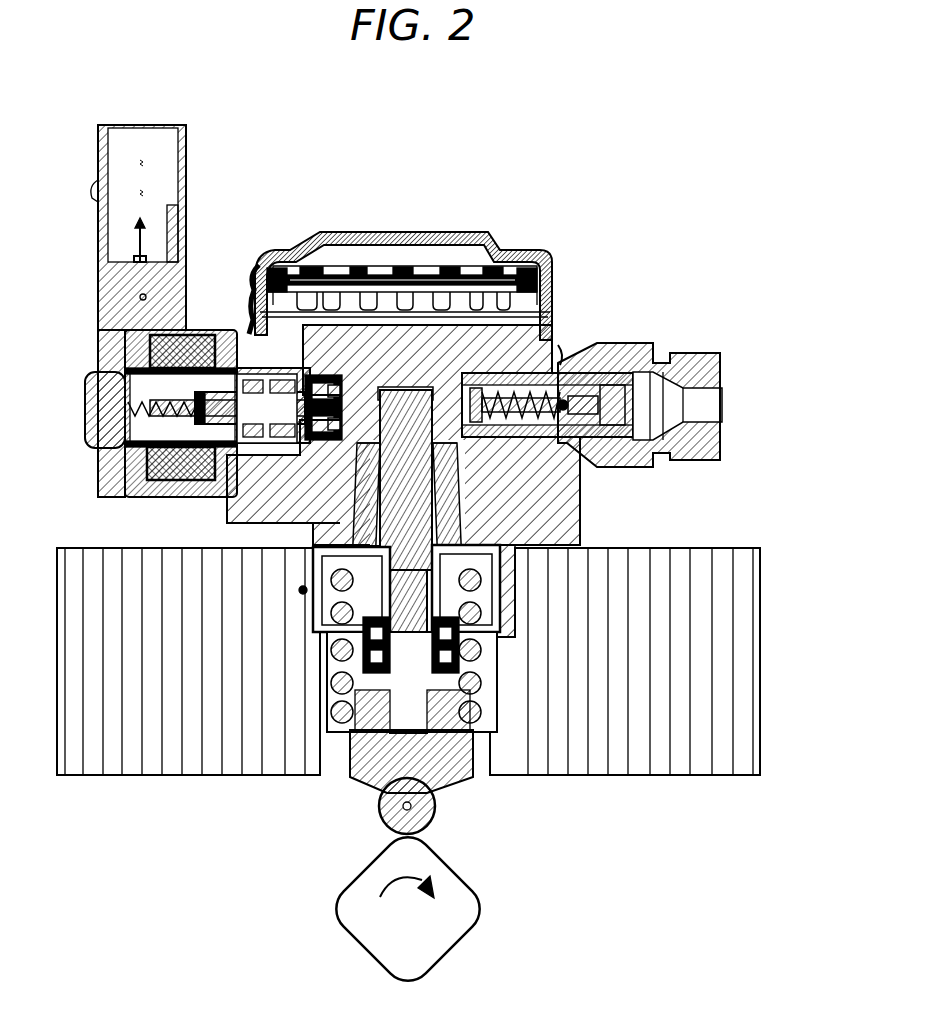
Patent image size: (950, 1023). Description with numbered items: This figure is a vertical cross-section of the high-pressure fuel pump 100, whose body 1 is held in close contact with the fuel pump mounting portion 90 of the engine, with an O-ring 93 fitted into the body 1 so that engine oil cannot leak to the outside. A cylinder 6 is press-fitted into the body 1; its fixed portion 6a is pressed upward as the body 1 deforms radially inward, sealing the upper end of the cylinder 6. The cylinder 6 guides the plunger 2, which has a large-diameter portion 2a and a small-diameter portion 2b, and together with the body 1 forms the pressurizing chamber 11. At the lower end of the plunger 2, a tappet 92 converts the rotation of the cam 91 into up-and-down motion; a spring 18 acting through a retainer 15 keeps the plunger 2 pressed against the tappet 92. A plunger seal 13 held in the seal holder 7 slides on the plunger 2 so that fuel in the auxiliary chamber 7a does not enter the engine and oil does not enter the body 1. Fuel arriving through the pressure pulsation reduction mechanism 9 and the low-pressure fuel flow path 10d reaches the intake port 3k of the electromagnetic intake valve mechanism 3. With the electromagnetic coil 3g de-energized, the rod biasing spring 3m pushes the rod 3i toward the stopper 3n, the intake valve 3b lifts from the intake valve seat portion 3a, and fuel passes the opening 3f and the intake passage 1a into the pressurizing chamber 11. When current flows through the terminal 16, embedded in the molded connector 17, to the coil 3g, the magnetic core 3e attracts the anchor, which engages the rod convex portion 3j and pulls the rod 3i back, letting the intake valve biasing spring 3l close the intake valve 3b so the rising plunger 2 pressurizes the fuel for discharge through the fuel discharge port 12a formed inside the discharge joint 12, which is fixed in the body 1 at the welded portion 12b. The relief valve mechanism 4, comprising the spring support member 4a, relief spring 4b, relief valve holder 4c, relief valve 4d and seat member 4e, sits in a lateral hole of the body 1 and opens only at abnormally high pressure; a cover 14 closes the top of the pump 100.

The fuel pump 100 is at (582, 223).
The body 1 is at (538, 285).
The intake passage 1a is at (357, 385).
The plunger 2 is at (650, 797).
The large-diameter portion 2a is at (447, 538).
The small-diameter portion 2b is at (405, 592).
The electromagnetic intake valve mechanism 3 is at (122, 466).
The intake valve seat portion 3a is at (322, 405).
The intake valve 3b is at (335, 400).
The magnetic core 3e is at (200, 432).
The opening 3f is at (240, 455).
The electromagnetic coil 3g is at (190, 465).
The rod 3i is at (200, 415).
The rod convex portion 3j is at (207, 400).
The intake port 3k is at (310, 396).
The intake valve biasing spring 3l is at (300, 418).
The rod biasing spring 3m is at (140, 410).
The stopper 3n is at (297, 427).
The relief valve mechanism 4 is at (705, 497).
The spring support member 4a is at (470, 420).
The relief spring 4b is at (483, 413).
The relief valve holder 4c is at (507, 413).
The relief valve 4d is at (550, 403).
The seat member 4e is at (563, 403).
The cylinder 6 is at (355, 500).
The fixed portion 6a is at (355, 523).
The seal holder 7 is at (338, 658).
The auxiliary chamber 7a is at (377, 590).
The pressure pulsation reduction mechanism 9 is at (446, 272).
The low-pressure fuel flow path 10d is at (298, 260).
The pressurizing chamber 11 is at (407, 388).
The discharge joint 12 is at (645, 350).
The fuel discharge port 12a is at (683, 353).
The welded portion 12b is at (565, 345).
The plunger seal 13 is at (430, 677).
The damper cover 14 is at (506, 246).
The retainer 15 is at (420, 700).
The terminal 16 is at (140, 215).
The connector 17 is at (97, 278).
The spring 18 is at (345, 686).
The fuel pump mounting portion 90 is at (172, 727).
The cam 91 is at (445, 905).
The tappet 92 is at (453, 782).
The O-ring 93 is at (300, 590).